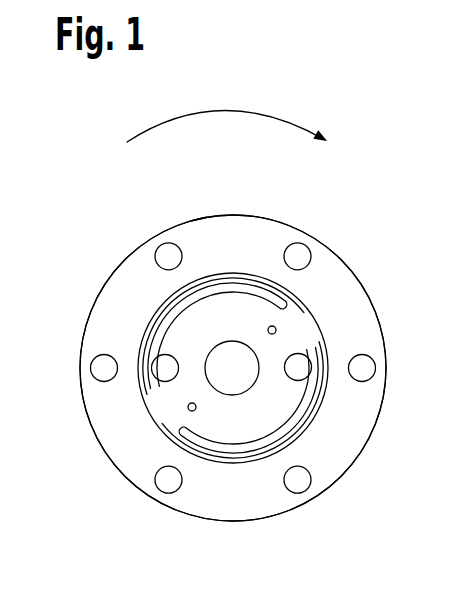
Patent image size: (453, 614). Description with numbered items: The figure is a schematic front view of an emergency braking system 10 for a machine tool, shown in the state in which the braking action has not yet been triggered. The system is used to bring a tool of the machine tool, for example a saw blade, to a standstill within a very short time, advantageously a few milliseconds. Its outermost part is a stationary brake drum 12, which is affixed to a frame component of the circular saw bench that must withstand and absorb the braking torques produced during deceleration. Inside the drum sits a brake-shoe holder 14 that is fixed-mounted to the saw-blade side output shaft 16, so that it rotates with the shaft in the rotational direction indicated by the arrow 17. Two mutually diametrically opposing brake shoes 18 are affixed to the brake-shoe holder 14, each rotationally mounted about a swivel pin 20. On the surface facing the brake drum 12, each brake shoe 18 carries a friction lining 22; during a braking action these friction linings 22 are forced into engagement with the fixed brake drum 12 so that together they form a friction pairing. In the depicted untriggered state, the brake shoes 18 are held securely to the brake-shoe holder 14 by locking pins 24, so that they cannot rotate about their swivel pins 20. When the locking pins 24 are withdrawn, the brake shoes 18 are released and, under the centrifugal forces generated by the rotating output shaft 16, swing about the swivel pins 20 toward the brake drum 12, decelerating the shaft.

The emergency braking system 10 is at (366, 190).
The brake drum 12 is at (198, 232).
The brake-shoe holder 14 is at (190, 337).
The output shaft 16 is at (232, 352).
The arrow 17 is at (220, 108).
The brake shoes 18 is at (283, 300).
The swivel pin 20 is at (300, 366).
The friction lining 22 is at (223, 289).
The locking pins 24 is at (272, 334).